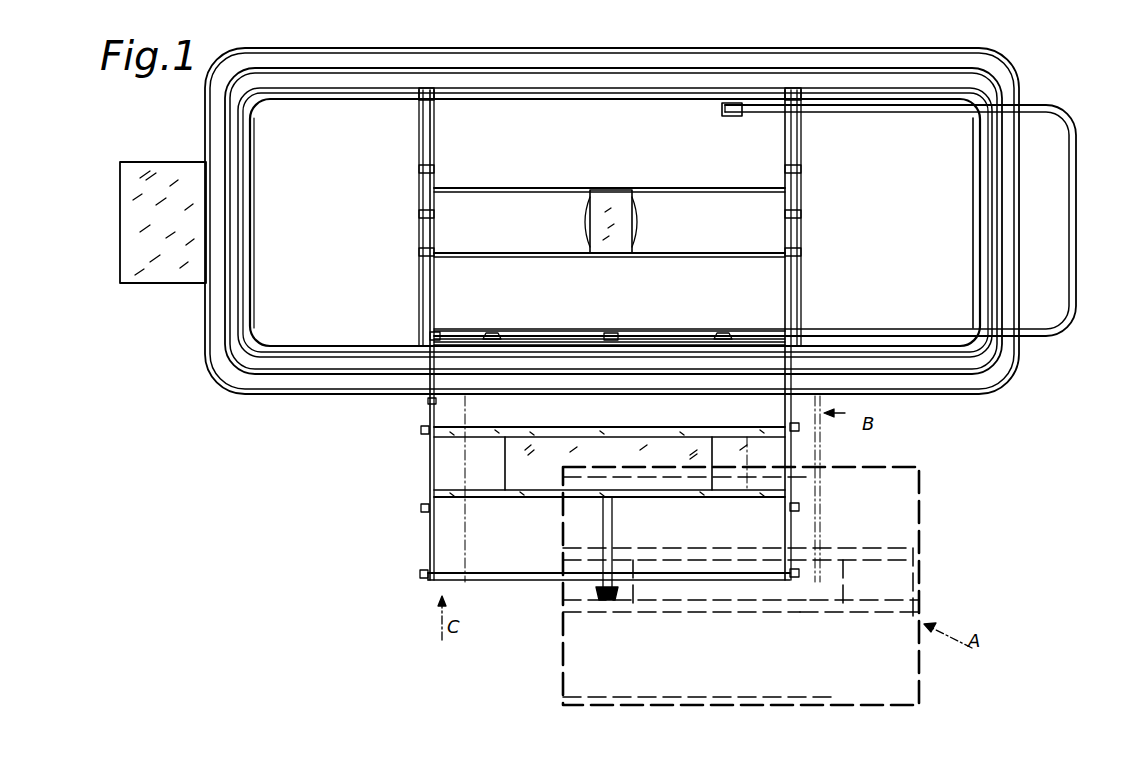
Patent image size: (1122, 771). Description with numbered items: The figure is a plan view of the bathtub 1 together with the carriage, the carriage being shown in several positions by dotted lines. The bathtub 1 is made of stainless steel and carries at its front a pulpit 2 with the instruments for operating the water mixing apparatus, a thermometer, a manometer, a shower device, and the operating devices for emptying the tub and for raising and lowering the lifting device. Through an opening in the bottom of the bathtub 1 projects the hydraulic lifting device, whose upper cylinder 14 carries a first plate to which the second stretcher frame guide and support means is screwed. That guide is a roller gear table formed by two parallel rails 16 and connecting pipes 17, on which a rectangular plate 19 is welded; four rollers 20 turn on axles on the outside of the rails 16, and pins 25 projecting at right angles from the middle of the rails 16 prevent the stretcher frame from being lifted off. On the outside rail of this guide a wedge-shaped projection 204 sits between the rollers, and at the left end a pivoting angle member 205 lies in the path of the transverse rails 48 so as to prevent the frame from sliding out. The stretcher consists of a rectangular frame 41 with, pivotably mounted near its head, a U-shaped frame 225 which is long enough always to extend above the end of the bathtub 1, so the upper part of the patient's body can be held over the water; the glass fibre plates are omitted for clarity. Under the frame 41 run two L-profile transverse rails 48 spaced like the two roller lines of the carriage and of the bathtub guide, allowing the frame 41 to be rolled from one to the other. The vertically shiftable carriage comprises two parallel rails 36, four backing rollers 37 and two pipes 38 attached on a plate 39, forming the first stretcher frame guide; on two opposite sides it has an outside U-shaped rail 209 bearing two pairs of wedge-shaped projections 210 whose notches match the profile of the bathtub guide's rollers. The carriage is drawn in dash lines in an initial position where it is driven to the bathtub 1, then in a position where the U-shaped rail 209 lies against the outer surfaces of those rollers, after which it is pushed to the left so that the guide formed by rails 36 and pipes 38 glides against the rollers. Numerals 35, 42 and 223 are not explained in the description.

The bathtub 1 is at (297, 83).
The pulpit 2 is at (135, 278).
The upper cylinder 14 is at (638, 223).
The rails 16 is at (435, 132).
The connecting pipes 17 is at (547, 187).
The rectangular plate 19 is at (615, 195).
The rollers 20 is at (418, 168).
The pins 25 is at (418, 215).
The support leg 35 is at (610, 517).
The rails 36 is at (430, 402).
The backing rollers 37 is at (422, 430).
The pipes 38 is at (512, 430).
The plate 39 is at (552, 480).
The stretcher frame 41 is at (263, 98).
The bracket 42 is at (722, 103).
The transverse rails 48 is at (418, 250).
The wedge-shaped projection 204 is at (617, 335).
The angle member 205 is at (437, 333).
The U-shaped rail 209 is at (530, 343).
The wedge-shaped projections 210 is at (492, 338).
The hinge 223 is at (423, 92).
The U-shaped frame 225 is at (1068, 316).